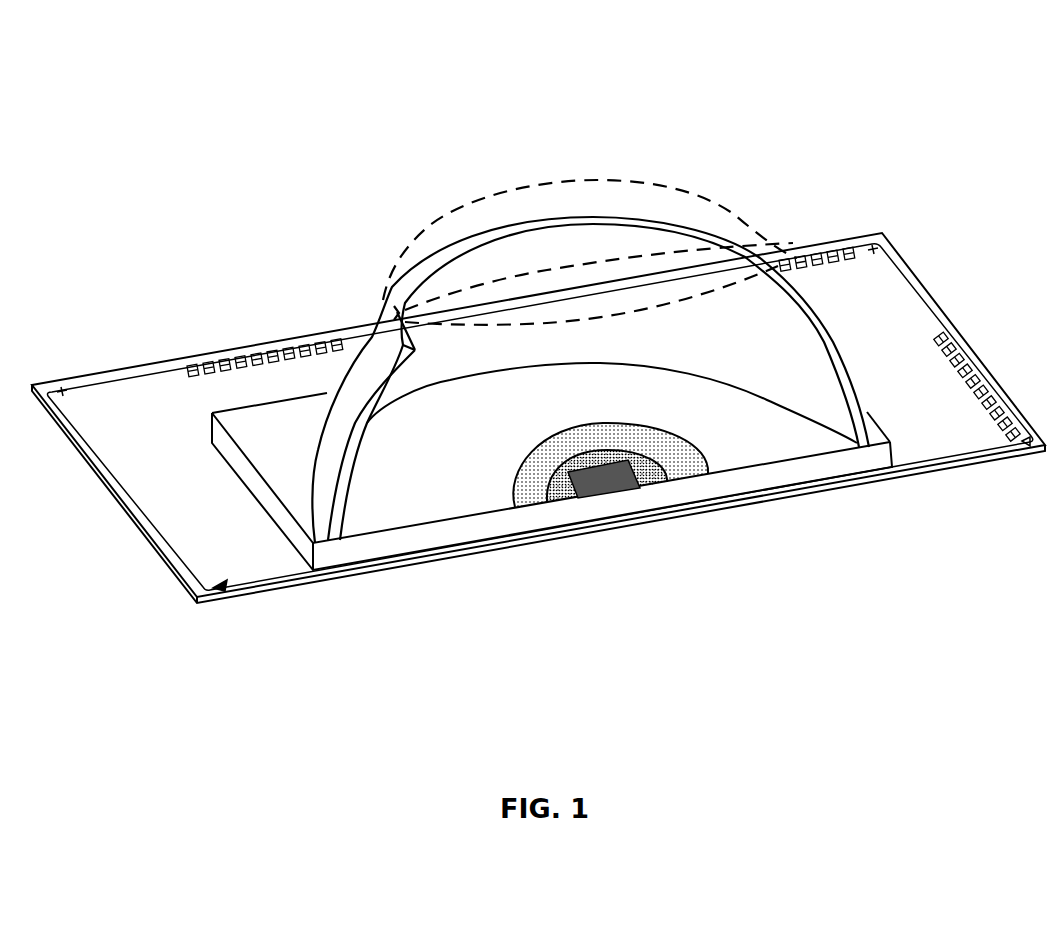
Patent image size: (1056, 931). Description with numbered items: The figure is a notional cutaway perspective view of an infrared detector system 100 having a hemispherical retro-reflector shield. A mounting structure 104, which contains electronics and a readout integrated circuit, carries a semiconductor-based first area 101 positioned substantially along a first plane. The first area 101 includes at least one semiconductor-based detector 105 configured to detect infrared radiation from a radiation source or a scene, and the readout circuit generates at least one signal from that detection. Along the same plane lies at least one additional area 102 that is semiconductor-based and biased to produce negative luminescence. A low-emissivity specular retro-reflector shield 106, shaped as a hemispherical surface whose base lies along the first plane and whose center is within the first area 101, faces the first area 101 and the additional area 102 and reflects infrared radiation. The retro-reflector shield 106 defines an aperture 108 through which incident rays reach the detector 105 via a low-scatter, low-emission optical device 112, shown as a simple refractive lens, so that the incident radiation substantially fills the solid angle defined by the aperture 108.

The light emitting device 100 is at (962, 115).
The first area 101 is at (648, 472).
The additional area 102 is at (540, 467).
The mounting structure 104 is at (188, 522).
The detector 105 is at (623, 473).
The retro-reflector shield 106 is at (367, 365).
The aperture 108 is at (753, 258).
The optical device 112 is at (507, 186).